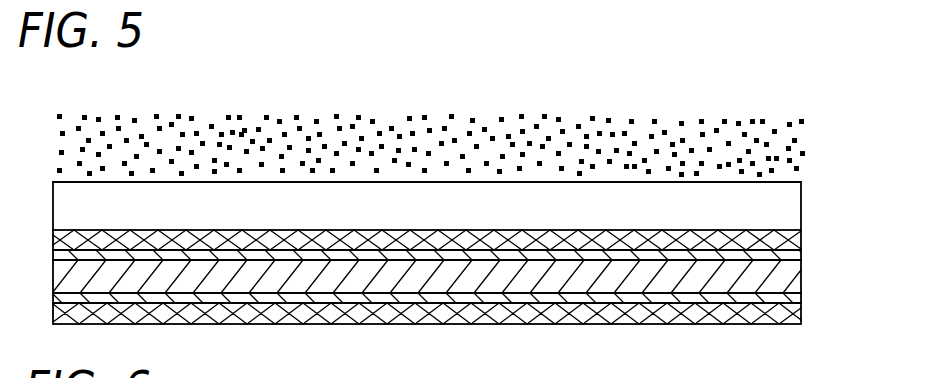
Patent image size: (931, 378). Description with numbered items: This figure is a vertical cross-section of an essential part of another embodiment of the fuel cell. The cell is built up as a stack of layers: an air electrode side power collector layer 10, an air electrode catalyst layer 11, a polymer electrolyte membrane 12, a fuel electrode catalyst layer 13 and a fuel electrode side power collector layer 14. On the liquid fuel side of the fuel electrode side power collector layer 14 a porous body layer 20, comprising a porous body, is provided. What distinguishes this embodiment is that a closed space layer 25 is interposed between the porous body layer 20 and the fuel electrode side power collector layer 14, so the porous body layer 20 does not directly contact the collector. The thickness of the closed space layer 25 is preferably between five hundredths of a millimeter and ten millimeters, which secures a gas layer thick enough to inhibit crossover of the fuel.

The air electrode side power collector layer 10 is at (627, 312).
The air electrode catalyst layer 11 is at (755, 300).
The polymer electrolyte membrane 12 is at (792, 283).
The fuel electrode catalyst layer 13 is at (792, 258).
The fuel electrode side power collector layer 14 is at (782, 239).
The porous body layer 20 is at (765, 147).
The closed space layer 25 is at (757, 203).